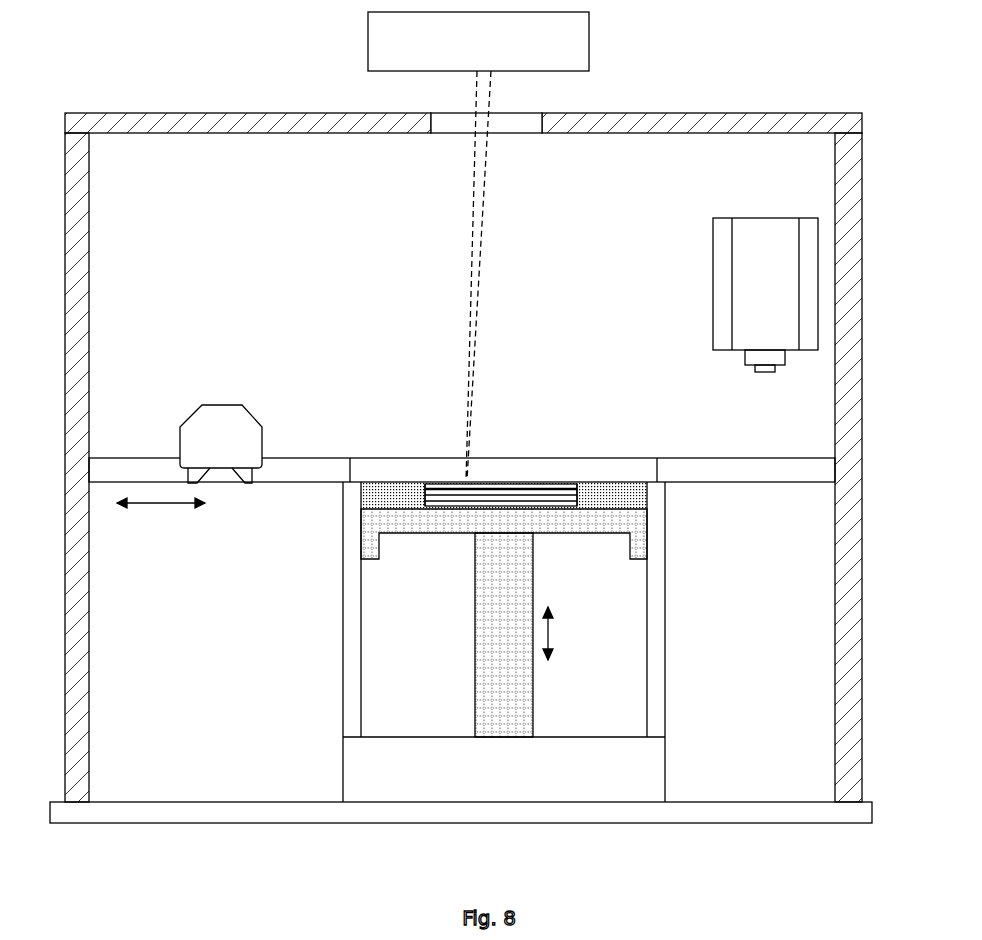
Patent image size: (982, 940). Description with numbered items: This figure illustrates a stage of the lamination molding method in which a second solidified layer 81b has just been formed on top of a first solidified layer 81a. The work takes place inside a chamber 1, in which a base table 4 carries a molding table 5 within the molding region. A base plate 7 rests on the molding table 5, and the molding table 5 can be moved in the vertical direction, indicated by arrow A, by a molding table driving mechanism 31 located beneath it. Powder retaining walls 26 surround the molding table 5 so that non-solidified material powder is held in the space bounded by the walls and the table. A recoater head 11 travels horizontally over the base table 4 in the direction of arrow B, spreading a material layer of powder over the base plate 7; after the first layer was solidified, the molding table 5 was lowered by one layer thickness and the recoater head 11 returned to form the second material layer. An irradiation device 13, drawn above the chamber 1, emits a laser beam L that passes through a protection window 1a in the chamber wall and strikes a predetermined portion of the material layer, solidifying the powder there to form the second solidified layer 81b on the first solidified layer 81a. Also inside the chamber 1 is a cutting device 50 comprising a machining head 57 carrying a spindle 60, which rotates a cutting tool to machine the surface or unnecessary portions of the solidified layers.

The chamber 1 is at (143, 119).
The protection window 1a is at (443, 128).
The irradiation device 13 is at (589, 45).
The laser beam L is at (470, 272).
The base table 4 is at (305, 481).
The recoater head 11 is at (223, 405).
The recoater head movement direction B is at (161, 517).
The powder retaining walls 26 is at (343, 600).
The molding table 5 is at (605, 526).
The molding table driving mechanism 31 is at (475, 640).
The vertical direction arrow A is at (557, 633).
The base plate 7 is at (446, 506).
The first solidified layer 81a is at (425, 497).
The second solidified layer 81b is at (577, 491).
The cutting device 50 is at (735, 273).
The machining head 57 is at (765, 218).
The spindle 60 is at (778, 352).